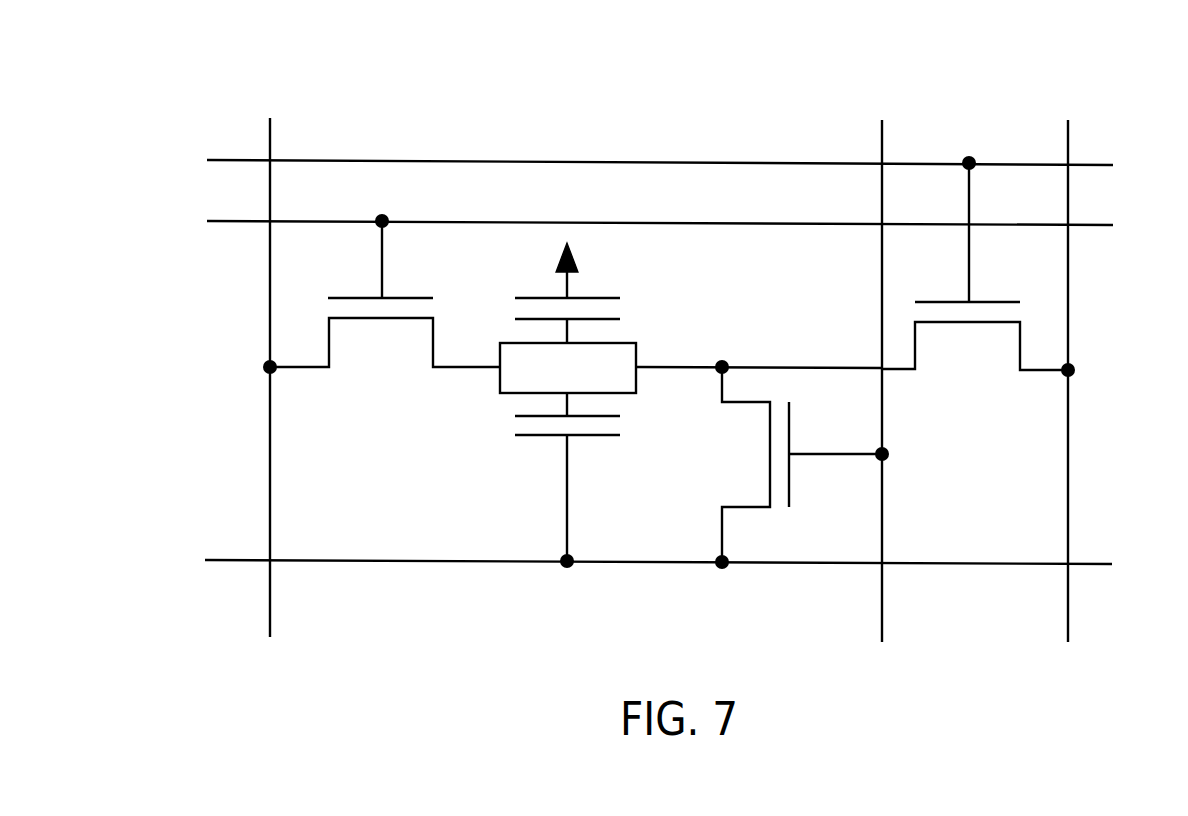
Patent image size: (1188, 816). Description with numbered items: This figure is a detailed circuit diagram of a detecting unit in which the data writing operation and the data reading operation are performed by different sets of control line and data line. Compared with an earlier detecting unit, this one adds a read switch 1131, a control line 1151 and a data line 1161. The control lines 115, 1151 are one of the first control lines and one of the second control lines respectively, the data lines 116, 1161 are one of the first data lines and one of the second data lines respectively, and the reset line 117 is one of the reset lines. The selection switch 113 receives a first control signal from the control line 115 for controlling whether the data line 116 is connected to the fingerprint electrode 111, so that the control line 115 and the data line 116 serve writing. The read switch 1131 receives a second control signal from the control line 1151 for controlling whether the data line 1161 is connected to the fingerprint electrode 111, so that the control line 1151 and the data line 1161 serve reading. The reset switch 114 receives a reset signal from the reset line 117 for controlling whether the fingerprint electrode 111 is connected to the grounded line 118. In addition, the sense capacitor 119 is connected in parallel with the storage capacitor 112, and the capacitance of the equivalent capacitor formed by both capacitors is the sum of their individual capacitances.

The fingerprint electrode 111 is at (638, 348).
The storage capacitor 112 is at (593, 438).
The selection switch 113 is at (397, 322).
The read switch 1131 is at (958, 323).
The reset switch 114 is at (770, 400).
The control line 115 is at (218, 221).
The control line 1151 is at (218, 160).
The data line 116 is at (272, 132).
The data line 1161 is at (1069, 123).
The reset line 117 is at (883, 123).
The grounded line 118 is at (937, 563).
The sense capacitor 119 is at (605, 297).